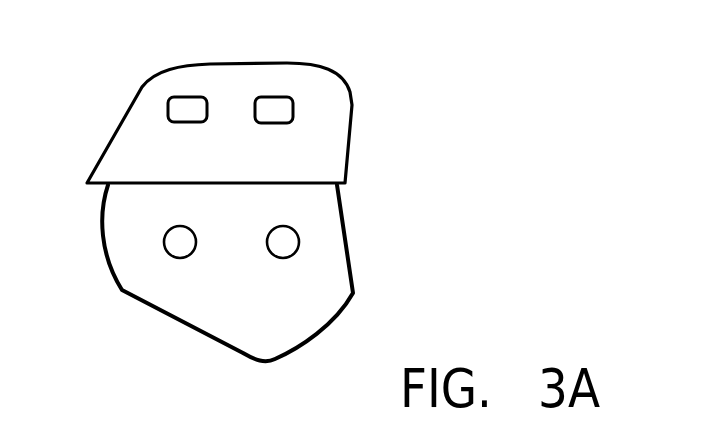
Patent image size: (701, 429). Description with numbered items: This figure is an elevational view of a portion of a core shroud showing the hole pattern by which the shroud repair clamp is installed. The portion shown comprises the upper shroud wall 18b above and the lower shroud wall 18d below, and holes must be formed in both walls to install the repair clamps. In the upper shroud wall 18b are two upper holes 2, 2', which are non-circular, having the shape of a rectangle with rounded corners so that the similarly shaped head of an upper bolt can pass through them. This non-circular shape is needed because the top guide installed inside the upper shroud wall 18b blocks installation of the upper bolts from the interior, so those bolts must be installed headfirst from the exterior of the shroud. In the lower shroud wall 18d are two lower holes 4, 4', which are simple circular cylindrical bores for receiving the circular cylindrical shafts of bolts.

The upper shroud wall 18b is at (113, 127).
The lower shroud wall 18d is at (121, 289).
The upper hole 2 is at (194, 133).
The upper hole 2' is at (306, 76).
The lower hole 4 is at (162, 228).
The lower hole 4' is at (325, 227).